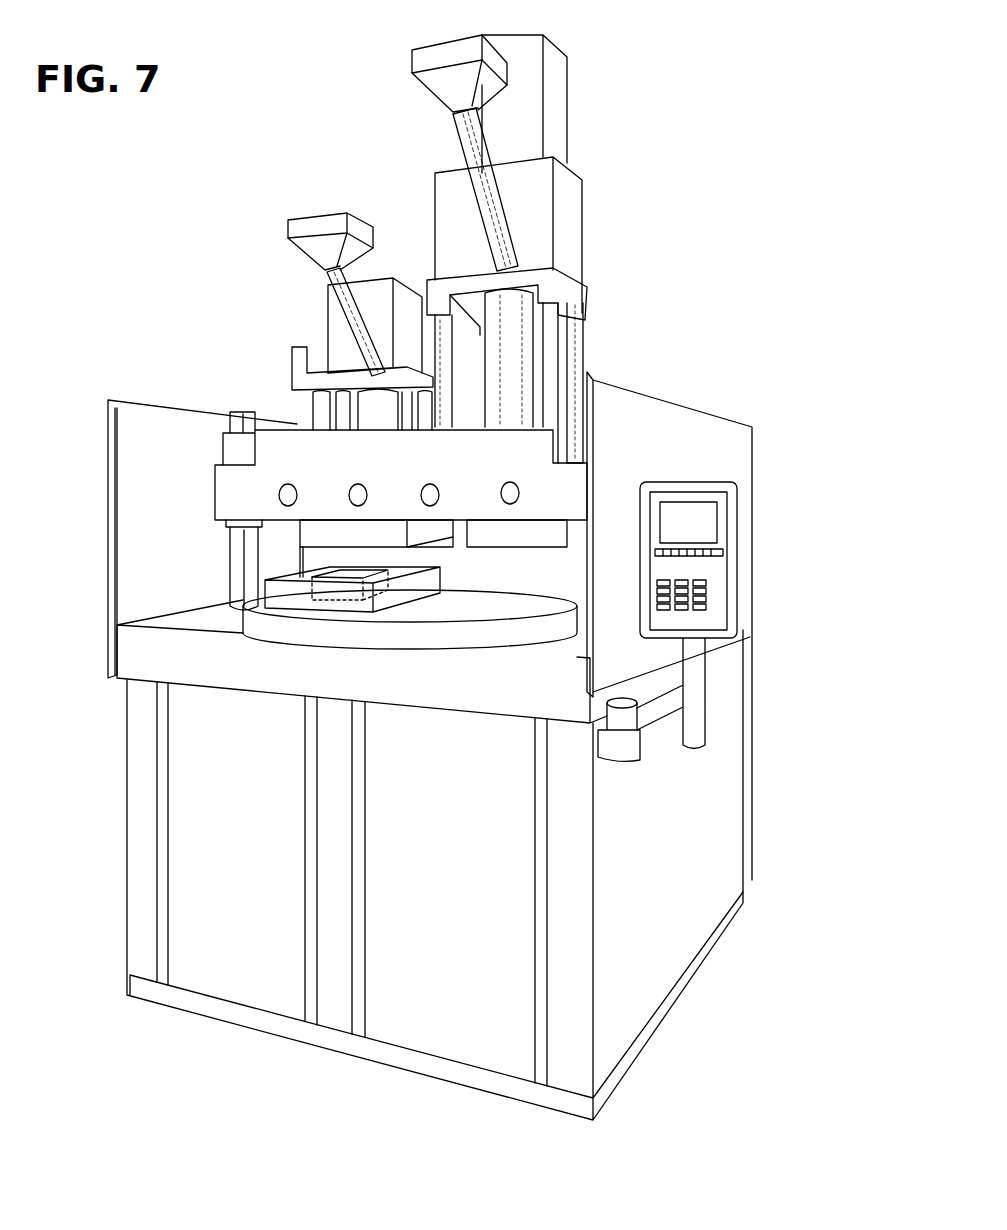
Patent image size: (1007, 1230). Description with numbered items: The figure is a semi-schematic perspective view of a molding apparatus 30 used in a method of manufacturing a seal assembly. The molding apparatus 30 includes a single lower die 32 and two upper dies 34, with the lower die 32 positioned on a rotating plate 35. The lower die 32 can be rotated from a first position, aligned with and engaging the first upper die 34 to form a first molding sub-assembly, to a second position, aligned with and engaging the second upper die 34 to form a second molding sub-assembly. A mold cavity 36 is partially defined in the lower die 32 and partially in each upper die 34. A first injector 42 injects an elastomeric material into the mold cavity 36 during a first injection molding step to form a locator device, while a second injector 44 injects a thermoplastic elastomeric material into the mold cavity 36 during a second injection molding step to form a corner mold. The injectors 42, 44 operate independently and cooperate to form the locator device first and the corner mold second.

The molding apparatus 30 is at (650, 140).
The lower die 32 is at (287, 597).
The upper die 34 is at (337, 543).
The rotating plate 35 is at (493, 633).
The mold cavity 36 is at (362, 566).
The first injector 42 is at (340, 343).
The second injector 44 is at (537, 253).